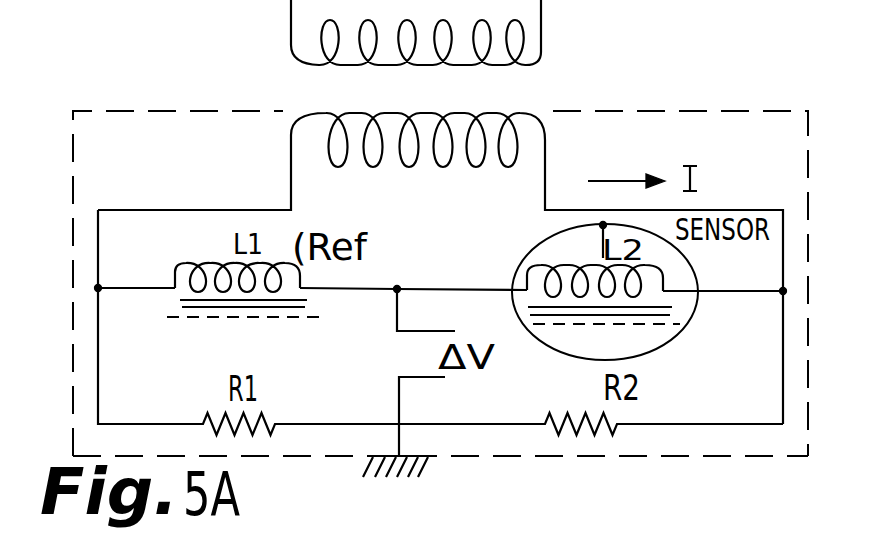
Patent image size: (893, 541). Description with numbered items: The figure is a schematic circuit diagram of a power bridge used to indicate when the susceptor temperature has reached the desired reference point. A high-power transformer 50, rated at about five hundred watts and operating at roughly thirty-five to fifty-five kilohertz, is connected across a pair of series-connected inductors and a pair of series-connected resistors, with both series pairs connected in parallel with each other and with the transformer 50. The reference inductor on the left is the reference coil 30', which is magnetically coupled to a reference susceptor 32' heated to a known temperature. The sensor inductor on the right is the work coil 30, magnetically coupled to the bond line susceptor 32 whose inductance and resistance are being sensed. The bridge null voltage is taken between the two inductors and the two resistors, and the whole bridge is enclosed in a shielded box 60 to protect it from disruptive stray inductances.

The transformer 50 is at (572, 106).
The shielded box 60 is at (648, 458).
The work coil 30 is at (635, 292).
The bond line susceptor 32 is at (643, 335).
The reference coil 30' is at (211, 264).
The reference susceptor 32' is at (224, 335).